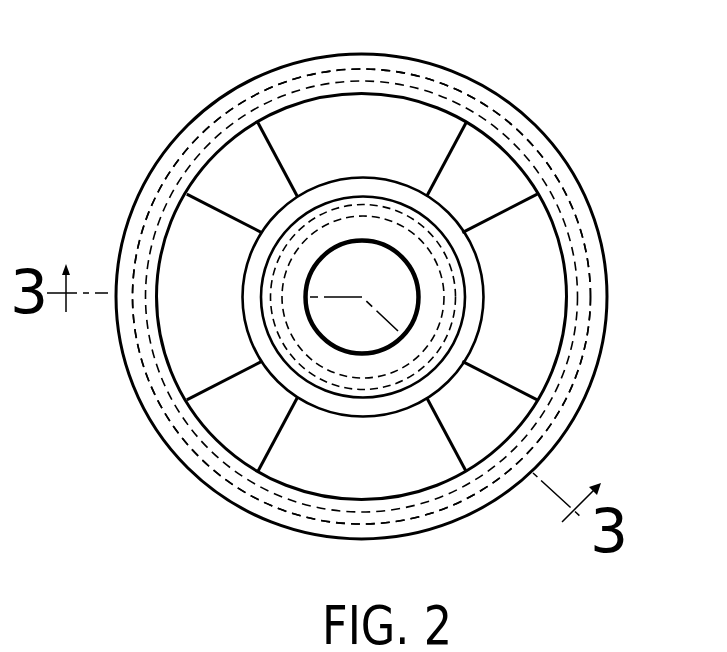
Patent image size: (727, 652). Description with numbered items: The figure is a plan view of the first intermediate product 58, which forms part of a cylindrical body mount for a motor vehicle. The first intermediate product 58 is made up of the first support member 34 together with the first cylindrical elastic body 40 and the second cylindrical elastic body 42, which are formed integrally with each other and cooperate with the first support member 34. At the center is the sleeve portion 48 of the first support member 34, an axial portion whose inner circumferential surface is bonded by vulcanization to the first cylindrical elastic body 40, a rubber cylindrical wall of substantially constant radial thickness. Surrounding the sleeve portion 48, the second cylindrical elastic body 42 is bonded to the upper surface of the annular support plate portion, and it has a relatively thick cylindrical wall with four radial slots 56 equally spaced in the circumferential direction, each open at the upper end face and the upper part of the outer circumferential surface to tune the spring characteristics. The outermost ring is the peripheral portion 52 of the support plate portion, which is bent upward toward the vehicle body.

The first support member 34 is at (597, 280).
The first cylindrical elastic body 40 is at (350, 225).
The second cylindrical elastic body 42 is at (542, 335).
The sleeve portion 48 is at (333, 382).
The peripheral portion 52 is at (148, 348).
The radial slots 56 is at (216, 203).
The first intermediate product 58 is at (463, 50).